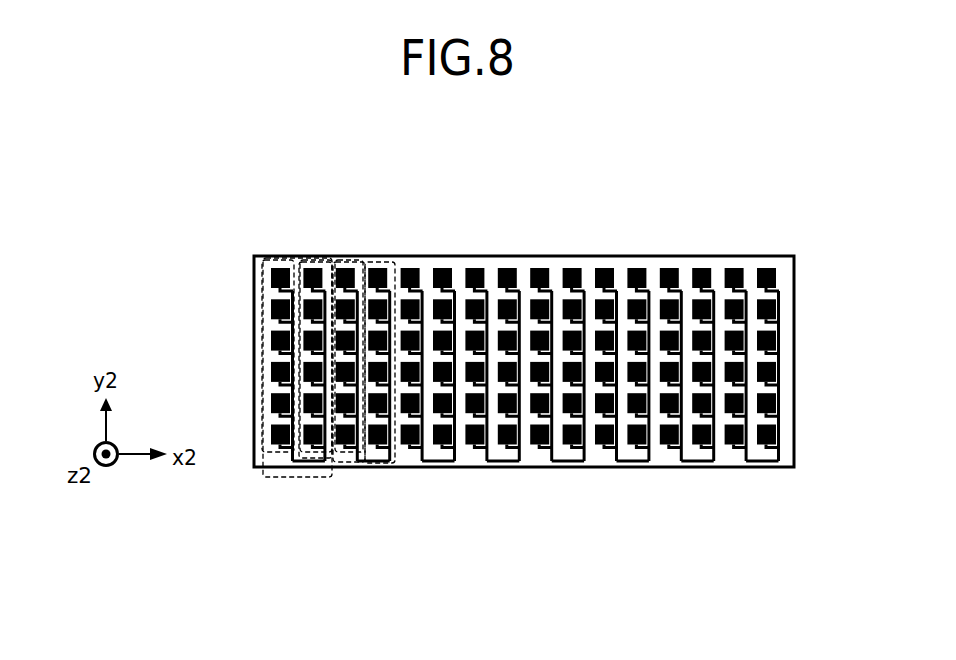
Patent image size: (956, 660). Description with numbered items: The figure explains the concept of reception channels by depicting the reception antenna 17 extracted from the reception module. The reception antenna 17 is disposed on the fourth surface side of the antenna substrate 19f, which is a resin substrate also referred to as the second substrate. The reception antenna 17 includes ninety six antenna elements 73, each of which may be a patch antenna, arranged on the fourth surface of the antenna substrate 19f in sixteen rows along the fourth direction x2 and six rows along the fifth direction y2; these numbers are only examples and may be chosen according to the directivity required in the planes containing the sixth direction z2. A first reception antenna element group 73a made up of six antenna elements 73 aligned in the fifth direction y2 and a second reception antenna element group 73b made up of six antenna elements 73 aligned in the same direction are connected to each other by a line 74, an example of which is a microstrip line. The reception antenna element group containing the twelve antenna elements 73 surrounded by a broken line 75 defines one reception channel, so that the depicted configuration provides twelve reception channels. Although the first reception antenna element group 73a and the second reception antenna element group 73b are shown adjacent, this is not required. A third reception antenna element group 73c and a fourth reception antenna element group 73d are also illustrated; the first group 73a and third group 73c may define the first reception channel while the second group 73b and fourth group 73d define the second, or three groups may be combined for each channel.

The reception antenna 17 is at (539, 166).
The antenna substrate 19f is at (782, 270).
The antenna element 73 is at (283, 262).
The line 74 is at (295, 288).
The broken line 75 is at (324, 260).
The first reception antenna element group 73a is at (276, 478).
The second reception antenna element group 73b is at (313, 460).
The third reception antenna element group 73c is at (343, 463).
The fourth reception antenna element group 73d is at (378, 464).